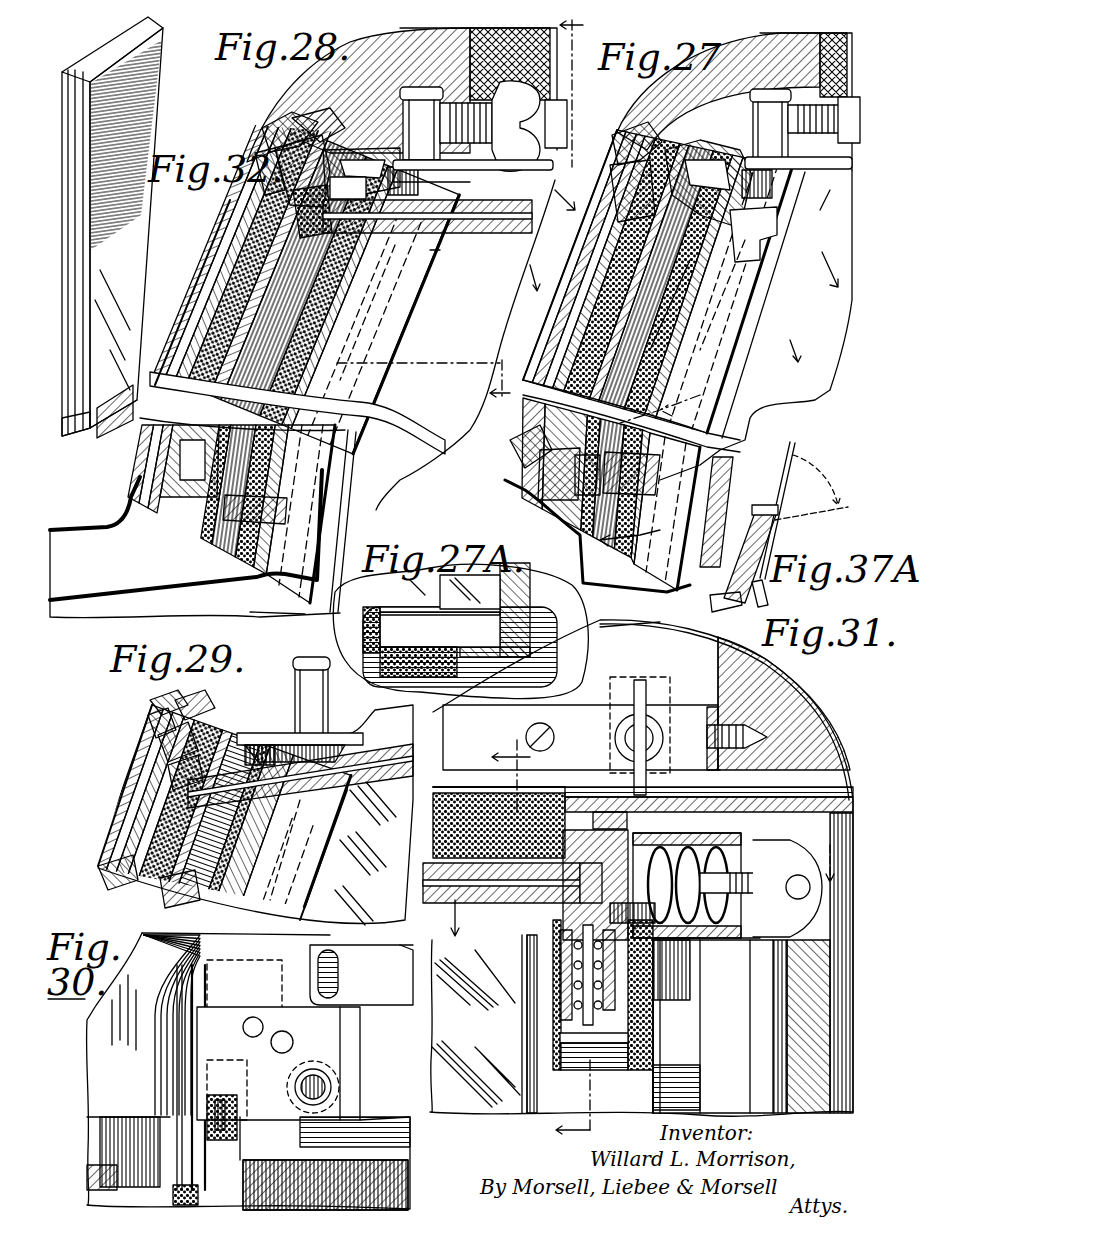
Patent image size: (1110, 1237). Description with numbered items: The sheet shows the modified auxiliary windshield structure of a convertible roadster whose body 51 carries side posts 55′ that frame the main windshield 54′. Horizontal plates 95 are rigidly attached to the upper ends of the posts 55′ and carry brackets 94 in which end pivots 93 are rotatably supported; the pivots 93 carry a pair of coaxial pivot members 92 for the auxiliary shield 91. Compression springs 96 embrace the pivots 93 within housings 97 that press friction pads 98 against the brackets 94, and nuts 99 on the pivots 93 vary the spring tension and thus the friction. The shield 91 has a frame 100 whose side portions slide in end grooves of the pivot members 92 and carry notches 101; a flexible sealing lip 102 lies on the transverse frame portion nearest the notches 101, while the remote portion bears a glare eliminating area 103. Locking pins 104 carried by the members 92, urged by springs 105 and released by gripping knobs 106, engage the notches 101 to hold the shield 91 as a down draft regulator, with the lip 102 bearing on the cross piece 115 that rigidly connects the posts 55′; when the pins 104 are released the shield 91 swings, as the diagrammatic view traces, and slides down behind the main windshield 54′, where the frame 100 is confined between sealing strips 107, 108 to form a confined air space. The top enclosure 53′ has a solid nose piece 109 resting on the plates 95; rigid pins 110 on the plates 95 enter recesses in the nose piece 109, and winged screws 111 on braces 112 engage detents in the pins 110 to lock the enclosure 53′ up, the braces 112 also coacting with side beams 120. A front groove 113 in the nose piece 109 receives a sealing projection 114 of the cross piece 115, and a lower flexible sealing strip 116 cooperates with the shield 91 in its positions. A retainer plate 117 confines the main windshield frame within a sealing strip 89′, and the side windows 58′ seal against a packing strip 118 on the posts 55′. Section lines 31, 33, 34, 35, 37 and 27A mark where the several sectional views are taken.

In FIG. 28, the section line 31— 31 is at (423, 383).
In FIG. 27, the section line 31— 31 is at (588, 91).
In FIG. 27, the section line 33 is at (693, 253).
In FIG. 27, the section line 34 is at (664, 326).
In FIG. 31, the section line 35 is at (530, 942).
In FIG. 31, the section line 37 is at (637, 884).
In FIG. 27, the section line 27A— 27A is at (652, 480).
In FIG. 28, the body 51 is at (75, 545).
In FIG. 28, the top enclosure 53′ is at (415, 35).
In FIG. 27, the top enclosure 53′ is at (775, 33).
In FIG. 31, the top enclosure 53′ is at (630, 636).
In FIG. 28, the main windshield 54′ is at (235, 310).
In FIG. 27, the main windshield 54′ is at (560, 352).
In FIG. 29, the main windshield 54′ is at (125, 848).
In FIG. 30, the main windshield 54′ is at (95, 1188).
In FIG. 37A, the main windshield 54′ is at (746, 560).
In FIG. 31, the main windshield 54′ is at (460, 1108).
In FIG. 27, the side posts 55′ is at (597, 552).
In FIG. 27A, the side posts 55′ is at (548, 615).
In FIG. 29, the side posts 55′ is at (320, 900).
In FIG. 30, the side posts 55′ is at (120, 1020).
In FIG. 28, the side windows 58′ is at (445, 448).
In FIG. 27, the side windows 58′ is at (812, 400).
In FIG. 29, the side windows 58′ is at (395, 905).
In FIG. 30, the side windows 58′ is at (375, 1000).
In FIG. 31, the side windows 58′ is at (808, 1105).
In FIG. 28, the sealing strip 89′ is at (310, 195).
In FIG. 27, the sealing strip 89′ is at (520, 475).
In FIG. 29, the sealing strip 89′ is at (158, 742).
In FIG. 32, the auxiliary shield 91 is at (122, 275).
In FIG. 28, the auxiliary shield 91 is at (478, 215).
In FIG. 27, the auxiliary shield 91 is at (680, 332).
In FIG. 27A, the auxiliary shield 91 is at (415, 605).
In FIG. 29, the auxiliary shield 91 is at (385, 780).
In FIG. 37A, the auxiliary shield 91 is at (810, 465).
In FIG. 31, the auxiliary shield 91 is at (455, 875).
In FIG. 28, the pivot members 92 is at (348, 189).
In FIG. 27, the pivot members 92 is at (752, 200).
In FIG. 29, the pivot members 92 is at (243, 748).
In FIG. 31, the pivot members 92 is at (582, 830).
In FIG. 31, the end pivots 93 is at (668, 942).
In FIG. 29, the brackets 94 is at (258, 740).
In FIG. 30, the brackets 94 is at (290, 1032).
In FIG. 31, the brackets 94 is at (740, 960).
In FIG. 28, the horizontal plates 95 is at (470, 170).
In FIG. 27, the horizontal plates 95 is at (798, 163).
In FIG. 29, the horizontal plates 95 is at (350, 728).
In FIG. 30, the horizontal plates 95 is at (345, 1042).
In FIG. 31, the horizontal plates 95 is at (790, 800).
In FIG. 31, the compression springs 96 is at (705, 938).
In FIG. 30, the housings 97 is at (250, 1075).
In FIG. 31, the housings 97 is at (680, 830).
In FIG. 30, the friction pads 98 is at (262, 990).
In FIG. 31, the friction pads 98 is at (742, 840).
In FIG. 31, the nuts 99 is at (770, 850).
In FIG. 32, the frame 100 is at (88, 55).
In FIG. 28, the frame 100 is at (393, 240).
In FIG. 27, the frame 100 is at (700, 298).
In FIG. 27A, the frame 100 is at (463, 608).
In FIG. 30, the frame 100 is at (380, 1165).
In FIG. 31, the frame 100 is at (550, 912).
In FIG. 32, the notches 101 is at (68, 440).
In FIG. 27A, the notches 101 is at (495, 625).
In FIG. 32, the flexible sealing lip 102 is at (112, 440).
In FIG. 28, the flexible sealing lip 102 is at (320, 222).
In FIG. 27, the flexible sealing lip 102 is at (582, 505).
In FIG. 27A, the flexible sealing lip 102 is at (380, 655).
In FIG. 29, the flexible sealing lip 102 is at (168, 788).
In FIG. 30, the flexible sealing lip 102 is at (173, 1198).
In FIG. 32, the glare eliminating area 103 is at (115, 200).
In FIG. 30, the glare eliminating area 103 is at (370, 1205).
In FIG. 31, the locking pins 104 is at (560, 948).
In FIG. 31, the springs 105 is at (575, 968).
In FIG. 28, the gripping knobs 106 is at (395, 325).
In FIG. 27, the gripping knobs 106 is at (800, 232).
In FIG. 29, the gripping knobs 106 is at (305, 870).
In FIG. 31, the gripping knobs 106 is at (560, 1027).
In FIG. 28, the sealing strip 107 is at (186, 490).
In FIG. 27, the sealing strip 107 is at (535, 500).
In FIG. 29, the sealing strip 107 is at (150, 885).
In FIG. 30, the sealing strip 107 is at (237, 1148).
In FIG. 28, the sealing strip 108 is at (248, 512).
In FIG. 27, the sealing strip 108 is at (650, 500).
In FIG. 27A, the sealing strip 108 is at (368, 630).
In FIG. 29, the sealing strip 108 is at (200, 905).
In FIG. 28, the nose piece 109 is at (330, 78).
In FIG. 27, the nose piece 109 is at (675, 85).
In FIG. 28, the rigid pins 110 is at (420, 120).
In FIG. 27, the rigid pins 110 is at (752, 118).
In FIG. 29, the rigid pins 110 is at (300, 688).
In FIG. 30, the rigid pins 110 is at (310, 1095).
In FIG. 31, the rigid pins 110 is at (660, 700).
In FIG. 28, the winged screws 111 is at (530, 124).
In FIG. 27, the winged screws 111 is at (768, 178).
In FIG. 31, the winged screws 111 is at (638, 684).
In FIG. 27, the braces 112 is at (562, 124).
In FIG. 31, the braces 112 is at (552, 712).
In FIG. 28, the front groove 113 is at (290, 125).
In FIG. 28, the sealing projection 114 is at (296, 136).
In FIG. 29, the sealing projection 114 is at (196, 700).
In FIG. 27, the cross piece 115 is at (618, 147).
In FIG. 29, the cross piece 115 is at (155, 698).
In FIG. 28, the lower flexible sealing strip 116 is at (410, 190).
In FIG. 27, the lower flexible sealing strip 116 is at (732, 145).
In FIG. 28, the retainer plate 117 is at (255, 182).
In FIG. 29, the retainer plate 117 is at (148, 722).
In FIG. 28, the packing strip 118 is at (275, 612).
In FIG. 30, the packing strip 118 is at (340, 970).
In FIG. 31, the packing strip 118 is at (760, 1030).
In FIG. 31, the side beams 120 is at (780, 700).